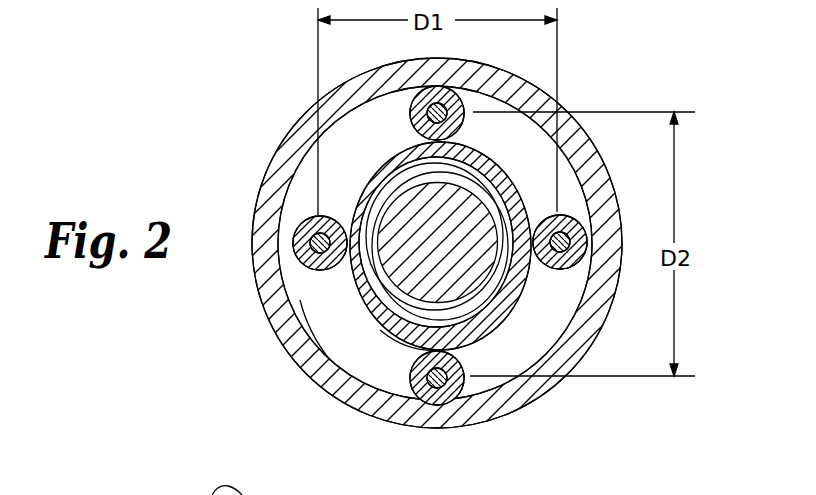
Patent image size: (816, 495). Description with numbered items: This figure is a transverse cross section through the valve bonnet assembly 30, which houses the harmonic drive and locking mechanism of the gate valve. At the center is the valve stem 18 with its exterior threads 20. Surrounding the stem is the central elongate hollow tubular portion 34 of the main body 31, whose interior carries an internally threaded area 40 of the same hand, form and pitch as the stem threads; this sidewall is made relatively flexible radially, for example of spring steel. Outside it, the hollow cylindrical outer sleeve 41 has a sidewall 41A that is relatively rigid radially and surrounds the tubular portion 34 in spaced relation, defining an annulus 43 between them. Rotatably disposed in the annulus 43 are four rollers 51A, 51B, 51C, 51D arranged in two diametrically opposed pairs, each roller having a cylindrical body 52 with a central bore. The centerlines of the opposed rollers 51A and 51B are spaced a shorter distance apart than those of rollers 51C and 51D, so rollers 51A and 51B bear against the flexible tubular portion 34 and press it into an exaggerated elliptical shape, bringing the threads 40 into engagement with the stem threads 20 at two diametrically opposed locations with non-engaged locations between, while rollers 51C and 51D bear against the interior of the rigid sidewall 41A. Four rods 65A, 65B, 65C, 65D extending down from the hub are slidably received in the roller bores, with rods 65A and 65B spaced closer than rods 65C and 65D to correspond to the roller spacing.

The valve stem 18 is at (458, 277).
The exterior threads 20 is at (400, 346).
The valve bonnet assembly 30 is at (612, 88).
The main body 31 is at (480, 166).
The central elongate hollow tubular portion 34 is at (402, 146).
The internally threaded area 40 is at (478, 180).
The outer sleeve 41 is at (296, 130).
The sidewall 41A is at (300, 168).
The annulus 43 is at (340, 327).
The roller 51A is at (298, 241).
The roller 51B is at (580, 243).
The roller 51C is at (437, 404).
The roller 51D is at (460, 96).
The cylindrical body 52 is at (412, 94).
The rod 65A is at (322, 266).
The rod 65B is at (562, 236).
The rod 65C is at (420, 384).
The rod 65D is at (443, 95).